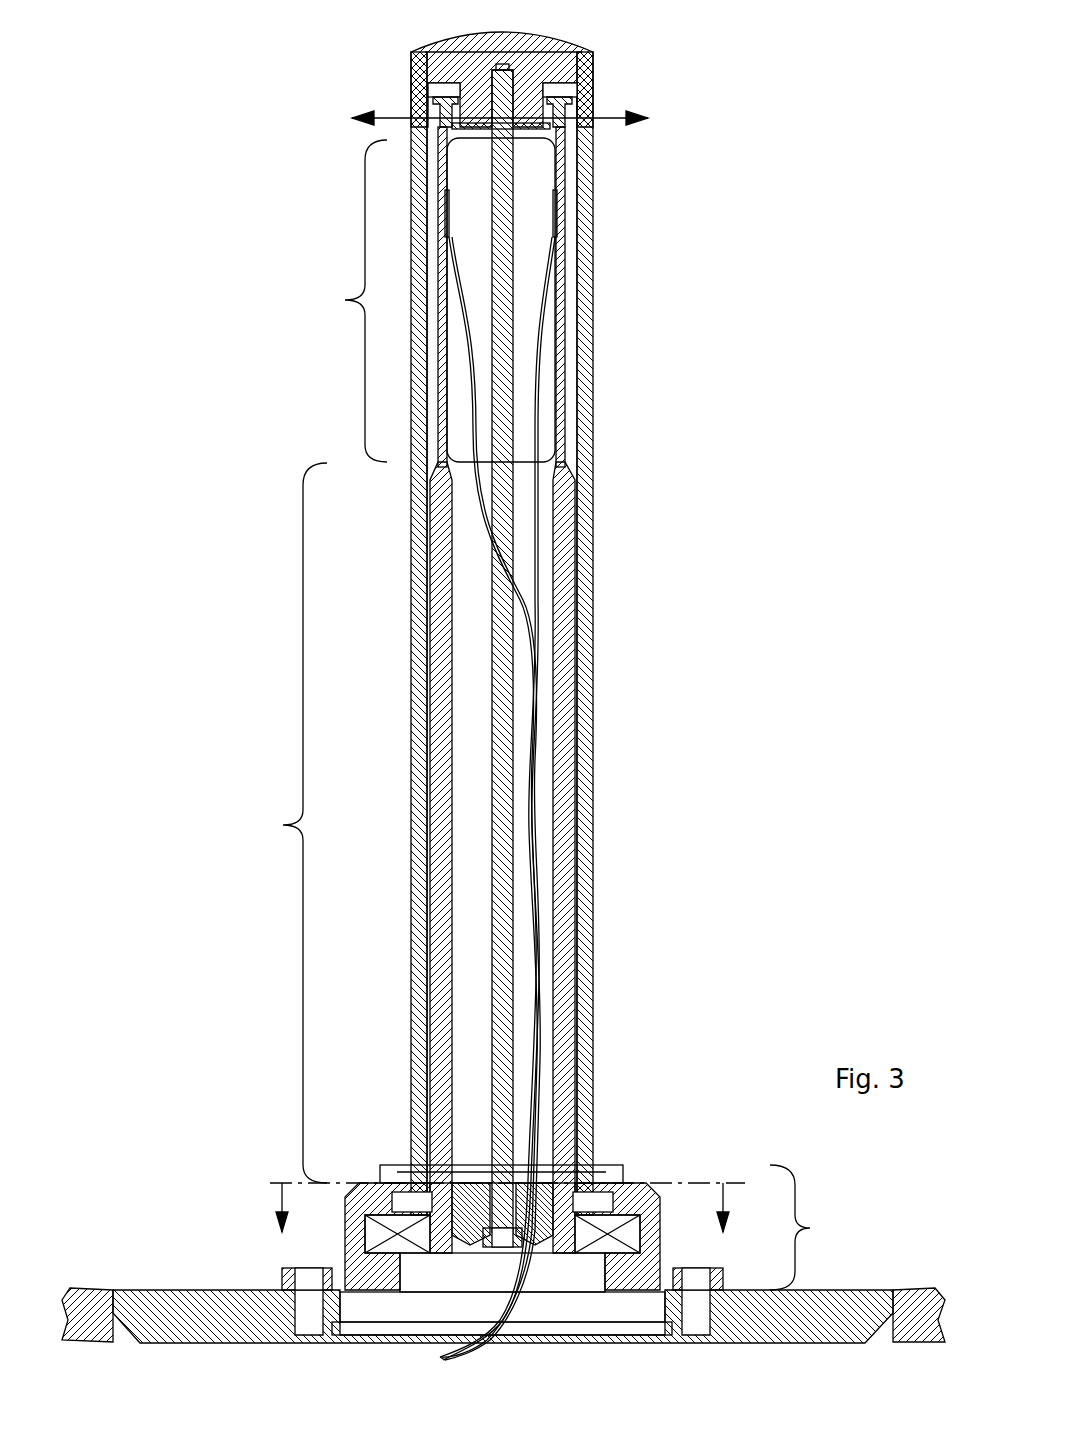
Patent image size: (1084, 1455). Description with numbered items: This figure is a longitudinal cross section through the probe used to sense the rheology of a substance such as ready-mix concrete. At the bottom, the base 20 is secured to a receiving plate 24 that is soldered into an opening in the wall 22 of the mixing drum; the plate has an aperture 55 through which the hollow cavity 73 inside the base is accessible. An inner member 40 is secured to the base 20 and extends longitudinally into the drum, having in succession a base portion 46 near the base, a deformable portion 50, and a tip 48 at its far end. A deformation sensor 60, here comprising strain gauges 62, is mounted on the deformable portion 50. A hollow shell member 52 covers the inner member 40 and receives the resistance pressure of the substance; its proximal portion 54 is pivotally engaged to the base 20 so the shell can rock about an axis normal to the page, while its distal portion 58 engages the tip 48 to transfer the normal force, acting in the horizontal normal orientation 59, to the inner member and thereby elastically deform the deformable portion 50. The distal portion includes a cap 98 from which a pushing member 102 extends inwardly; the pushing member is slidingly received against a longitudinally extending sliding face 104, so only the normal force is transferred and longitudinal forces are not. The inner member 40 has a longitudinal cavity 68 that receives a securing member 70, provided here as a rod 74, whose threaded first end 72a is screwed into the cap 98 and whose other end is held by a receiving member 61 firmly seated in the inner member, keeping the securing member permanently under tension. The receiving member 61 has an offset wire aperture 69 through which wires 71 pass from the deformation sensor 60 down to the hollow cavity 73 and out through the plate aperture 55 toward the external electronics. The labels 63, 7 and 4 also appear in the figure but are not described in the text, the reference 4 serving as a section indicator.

The distal portion 58 is at (470, 52).
The cap 98 is at (545, 42).
The first end 72a is at (498, 93).
The tip 48 is at (440, 110).
The sliding face 104 is at (557, 107).
The normal orientation 59 is at (618, 113).
The pushing member 102 is at (545, 115).
The deformation sensor 60 is at (447, 207).
The deformable portion 50 is at (345, 301).
The strain gauges 62 is at (448, 405).
The inner member 40 is at (576, 520).
The shell member 52 is at (600, 653).
The inner tube 63 is at (428, 752).
The wires 71 is at (537, 738).
The rod 74 is at (505, 815).
The base portion 46 is at (284, 823).
The securing member 70 is at (514, 982).
The receiving member 61 is at (470, 1190).
The longitudinal cavity 68 is at (515, 1185).
The base 20 is at (360, 1200).
The retaining ring 7 is at (613, 1165).
The section line 4 is at (504, 1193).
The wall 22 is at (92, 1300).
The receiving plate 24 is at (180, 1300).
The hollow cavity 73 is at (655, 1268).
The proximal portion 54 is at (808, 1227).
The wire aperture 69 is at (532, 1210).
The aperture 55 is at (597, 1305).